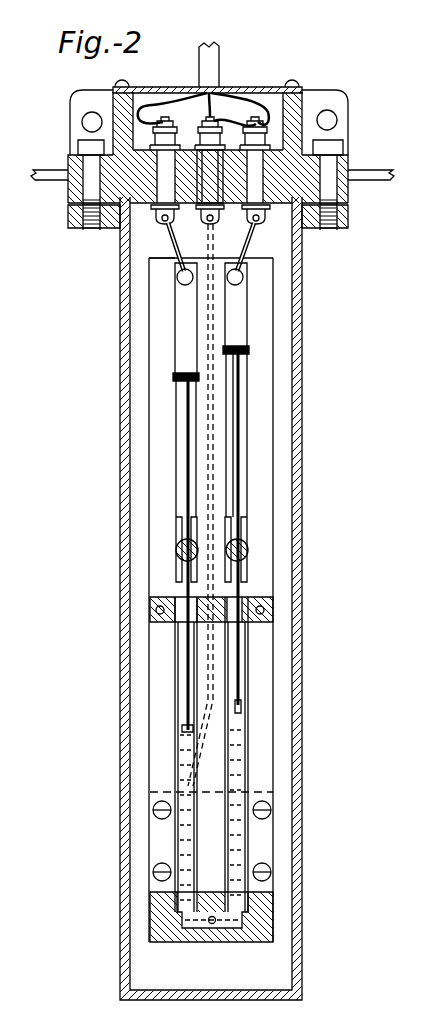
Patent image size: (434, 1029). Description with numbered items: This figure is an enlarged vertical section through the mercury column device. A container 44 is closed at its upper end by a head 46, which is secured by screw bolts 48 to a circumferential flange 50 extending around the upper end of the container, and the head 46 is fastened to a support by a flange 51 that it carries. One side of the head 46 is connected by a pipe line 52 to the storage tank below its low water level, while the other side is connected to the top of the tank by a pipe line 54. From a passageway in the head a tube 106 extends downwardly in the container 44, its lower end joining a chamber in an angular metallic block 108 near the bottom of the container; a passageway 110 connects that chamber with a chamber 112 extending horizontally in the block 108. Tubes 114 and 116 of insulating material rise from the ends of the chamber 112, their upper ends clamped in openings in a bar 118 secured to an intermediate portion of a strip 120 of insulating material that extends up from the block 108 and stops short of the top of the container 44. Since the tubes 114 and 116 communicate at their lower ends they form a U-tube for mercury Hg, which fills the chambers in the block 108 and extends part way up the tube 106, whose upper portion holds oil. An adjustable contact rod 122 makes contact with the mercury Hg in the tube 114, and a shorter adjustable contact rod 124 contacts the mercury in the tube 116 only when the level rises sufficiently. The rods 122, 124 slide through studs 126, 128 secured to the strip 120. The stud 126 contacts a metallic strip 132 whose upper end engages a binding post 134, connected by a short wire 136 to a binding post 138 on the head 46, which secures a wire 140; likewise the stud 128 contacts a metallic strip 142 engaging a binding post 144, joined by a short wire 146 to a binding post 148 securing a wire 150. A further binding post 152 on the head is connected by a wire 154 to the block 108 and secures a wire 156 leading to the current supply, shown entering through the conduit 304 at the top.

The container 44 is at (300, 498).
The head 46 is at (350, 189).
The screw bolts 48 is at (72, 140).
The circumferential flange 50 is at (347, 227).
The flange 51 is at (328, 100).
The pipe line 52 is at (381, 170).
The pipe line 54 is at (53, 173).
The tube 106 is at (215, 240).
The metallic block 108 is at (262, 920).
The passageway 110 is at (210, 927).
The chamber 112 is at (233, 923).
The tube 114 is at (175, 712).
The tube 116 is at (250, 717).
The bar 118 is at (270, 600).
The strip of insulating material 120 is at (262, 440).
The adjustable contact rod 122 is at (178, 590).
The adjustable contact rod 124 is at (242, 588).
The stud 126 is at (175, 551).
The stud 128 is at (250, 548).
The metallic strip 132 is at (180, 352).
The binding post 134 is at (177, 280).
The short wire 136 is at (172, 242).
The binding post 138 is at (152, 211).
The wire 140 is at (153, 110).
The metallic strip 142 is at (240, 328).
The binding post 144 is at (243, 280).
The short wire 146 is at (246, 243).
The binding post 148 is at (255, 172).
The wire 150 is at (243, 110).
The binding post 152 is at (247, 117).
The wire 154 is at (150, 258).
The wire 156 is at (229, 102).
The conduit 304 is at (221, 50).
The mercury Hg is at (237, 778).